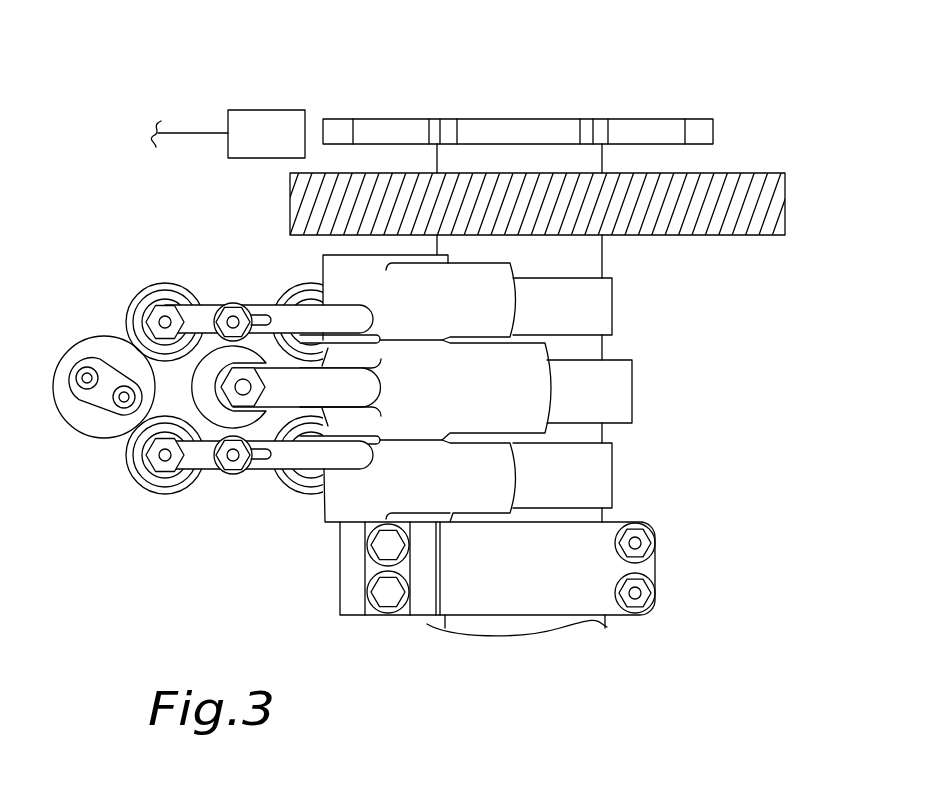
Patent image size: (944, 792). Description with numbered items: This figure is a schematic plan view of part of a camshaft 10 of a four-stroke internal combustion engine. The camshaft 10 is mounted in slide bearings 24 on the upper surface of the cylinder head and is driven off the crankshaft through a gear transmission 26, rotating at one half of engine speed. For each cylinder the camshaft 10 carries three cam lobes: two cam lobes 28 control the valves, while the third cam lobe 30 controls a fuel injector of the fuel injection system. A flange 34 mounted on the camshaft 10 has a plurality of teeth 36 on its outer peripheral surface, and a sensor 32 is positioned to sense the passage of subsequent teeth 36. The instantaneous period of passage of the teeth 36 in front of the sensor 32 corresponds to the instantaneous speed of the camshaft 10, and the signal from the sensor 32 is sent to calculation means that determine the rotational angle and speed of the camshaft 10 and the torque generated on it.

The camshaft 10 is at (636, 436).
The slide bearings 24 is at (572, 562).
The gear transmission 26 is at (737, 195).
The cam lobes 28 is at (588, 312).
The third cam lobe 30 is at (600, 388).
The sensor 32 is at (265, 123).
The flange 34 is at (508, 116).
The teeth 36 is at (334, 128).